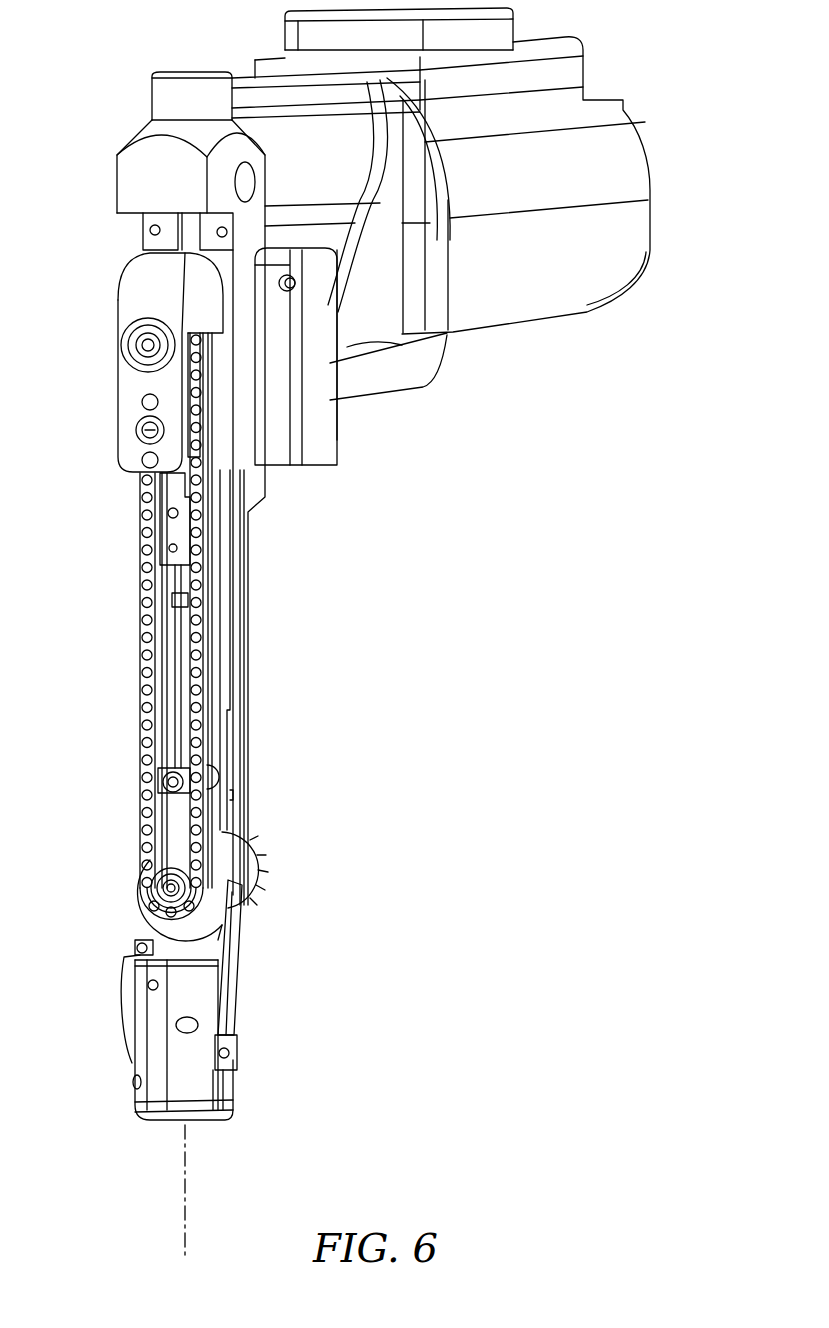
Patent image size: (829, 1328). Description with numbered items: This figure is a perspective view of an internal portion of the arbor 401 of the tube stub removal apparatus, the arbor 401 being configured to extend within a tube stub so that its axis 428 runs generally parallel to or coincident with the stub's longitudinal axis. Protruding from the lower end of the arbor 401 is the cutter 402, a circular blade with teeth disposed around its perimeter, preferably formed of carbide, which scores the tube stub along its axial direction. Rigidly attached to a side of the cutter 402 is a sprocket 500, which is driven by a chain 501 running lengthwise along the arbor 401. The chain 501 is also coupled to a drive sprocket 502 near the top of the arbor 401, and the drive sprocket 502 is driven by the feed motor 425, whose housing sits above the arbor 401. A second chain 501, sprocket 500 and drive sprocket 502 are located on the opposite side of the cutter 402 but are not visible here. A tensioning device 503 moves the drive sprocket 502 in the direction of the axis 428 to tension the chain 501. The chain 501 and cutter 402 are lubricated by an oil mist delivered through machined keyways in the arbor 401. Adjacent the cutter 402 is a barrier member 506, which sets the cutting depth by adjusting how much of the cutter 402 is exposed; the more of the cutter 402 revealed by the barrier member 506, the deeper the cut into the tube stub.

The feed motor 425 is at (577, 70).
The drive sprocket 502 is at (202, 365).
The tensioning device 503 is at (177, 532).
The arbor 401 is at (250, 630).
The chain 501 is at (207, 672).
The cutter 402 is at (222, 843).
The sprocket 500 is at (157, 853).
The barrier member 506 is at (223, 947).
The axis 428 is at (185, 1185).